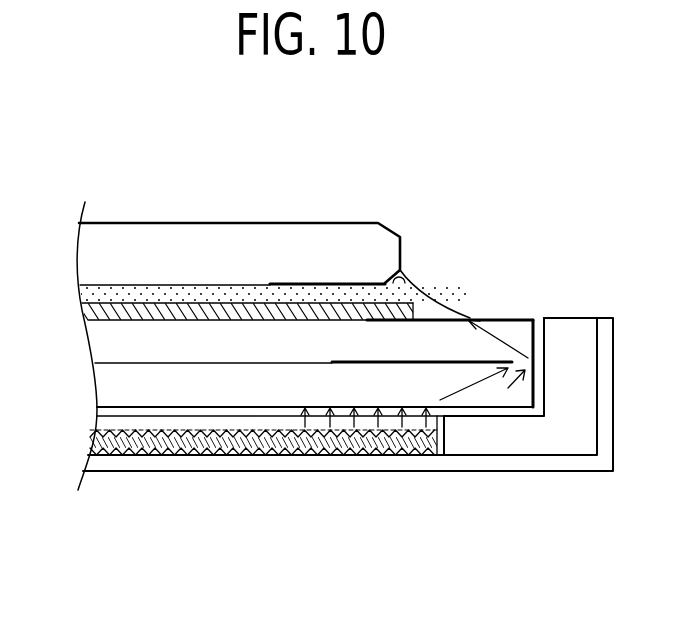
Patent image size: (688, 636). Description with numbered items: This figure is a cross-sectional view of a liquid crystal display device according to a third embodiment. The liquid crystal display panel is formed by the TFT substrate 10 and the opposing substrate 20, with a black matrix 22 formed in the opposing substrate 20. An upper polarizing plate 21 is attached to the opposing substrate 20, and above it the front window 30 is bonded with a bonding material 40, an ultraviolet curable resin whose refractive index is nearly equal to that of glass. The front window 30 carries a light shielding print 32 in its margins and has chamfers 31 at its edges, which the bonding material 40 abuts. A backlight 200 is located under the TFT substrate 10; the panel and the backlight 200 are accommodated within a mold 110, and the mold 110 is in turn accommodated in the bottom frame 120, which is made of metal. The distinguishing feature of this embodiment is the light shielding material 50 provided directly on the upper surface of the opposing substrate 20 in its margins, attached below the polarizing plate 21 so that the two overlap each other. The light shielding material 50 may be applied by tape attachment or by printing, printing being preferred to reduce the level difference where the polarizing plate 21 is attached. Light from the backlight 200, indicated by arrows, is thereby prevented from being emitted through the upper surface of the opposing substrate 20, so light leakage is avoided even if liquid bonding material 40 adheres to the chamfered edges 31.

The TFT substrate 10 is at (107, 388).
The opposing substrate 20 is at (103, 347).
The upper polarizing plate 21 is at (88, 313).
The black matrix 22 is at (368, 364).
The front window 30 is at (232, 235).
The chamfers 31 is at (410, 284).
The light shielding print 32 is at (322, 283).
The bonding material 40 is at (160, 293).
The light shielding material 50 is at (507, 313).
The mold 110 is at (537, 437).
The bottom frame 120 is at (452, 465).
The backlight 200 is at (83, 417).